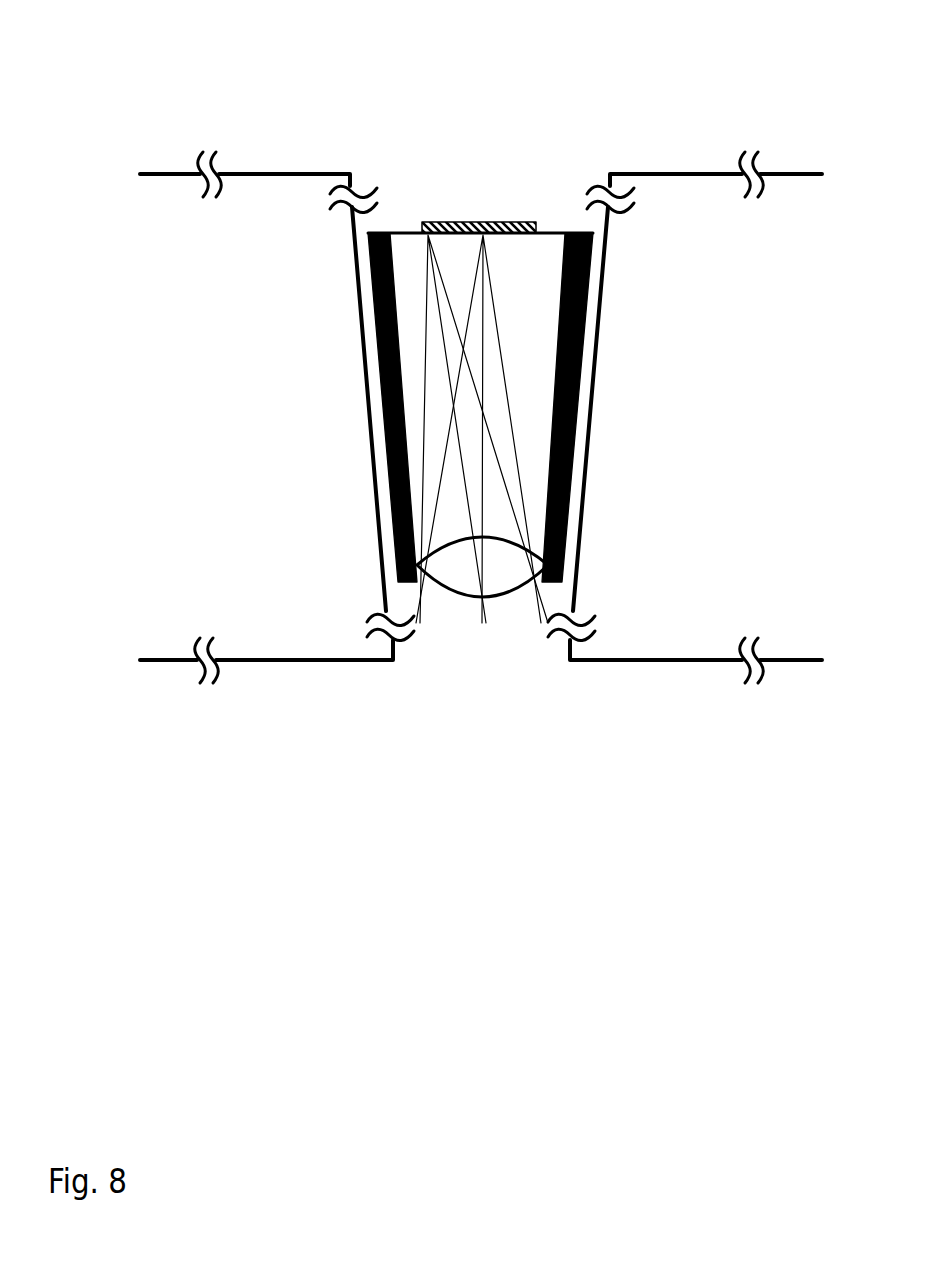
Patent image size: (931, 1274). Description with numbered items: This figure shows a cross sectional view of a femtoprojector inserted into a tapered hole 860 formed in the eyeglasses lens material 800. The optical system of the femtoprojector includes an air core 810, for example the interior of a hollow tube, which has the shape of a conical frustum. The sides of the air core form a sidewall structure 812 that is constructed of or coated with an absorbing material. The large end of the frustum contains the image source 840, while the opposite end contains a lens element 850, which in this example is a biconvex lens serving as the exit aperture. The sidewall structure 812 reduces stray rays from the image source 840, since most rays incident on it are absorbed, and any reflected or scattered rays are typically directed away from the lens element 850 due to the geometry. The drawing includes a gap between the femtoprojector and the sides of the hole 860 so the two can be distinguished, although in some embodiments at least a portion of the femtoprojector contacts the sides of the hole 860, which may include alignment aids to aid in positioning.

The eyeglasses lens material 800 is at (326, 404).
The tapered hole 860 is at (392, 187).
The sidewall structure 812 is at (583, 232).
The air core 810 is at (548, 322).
The image source 840 is at (483, 222).
The lens element 850 is at (527, 577).